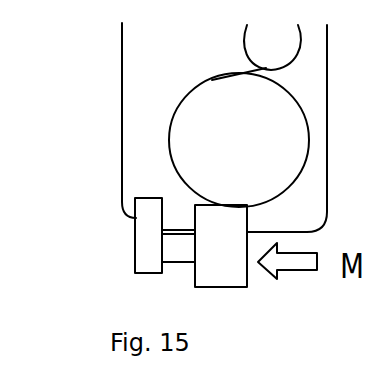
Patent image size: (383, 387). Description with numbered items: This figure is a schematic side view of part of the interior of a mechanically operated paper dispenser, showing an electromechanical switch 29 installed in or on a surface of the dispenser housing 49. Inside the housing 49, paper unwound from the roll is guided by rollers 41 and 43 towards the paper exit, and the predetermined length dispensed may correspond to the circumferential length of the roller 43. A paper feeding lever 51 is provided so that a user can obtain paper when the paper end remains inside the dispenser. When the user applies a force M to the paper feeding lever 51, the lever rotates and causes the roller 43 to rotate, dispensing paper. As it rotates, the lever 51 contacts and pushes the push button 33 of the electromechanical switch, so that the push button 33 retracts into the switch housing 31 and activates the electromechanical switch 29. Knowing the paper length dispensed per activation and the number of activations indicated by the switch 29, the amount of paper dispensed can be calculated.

The electromechanical switch 29 is at (110, 260).
The housing of the electromechanical switch 31 is at (132, 243).
The push button 33 is at (177, 263).
The roller 41 is at (292, 46).
The roller 43 is at (281, 110).
The housing 49 is at (328, 147).
The paper feeding lever 51 is at (246, 283).